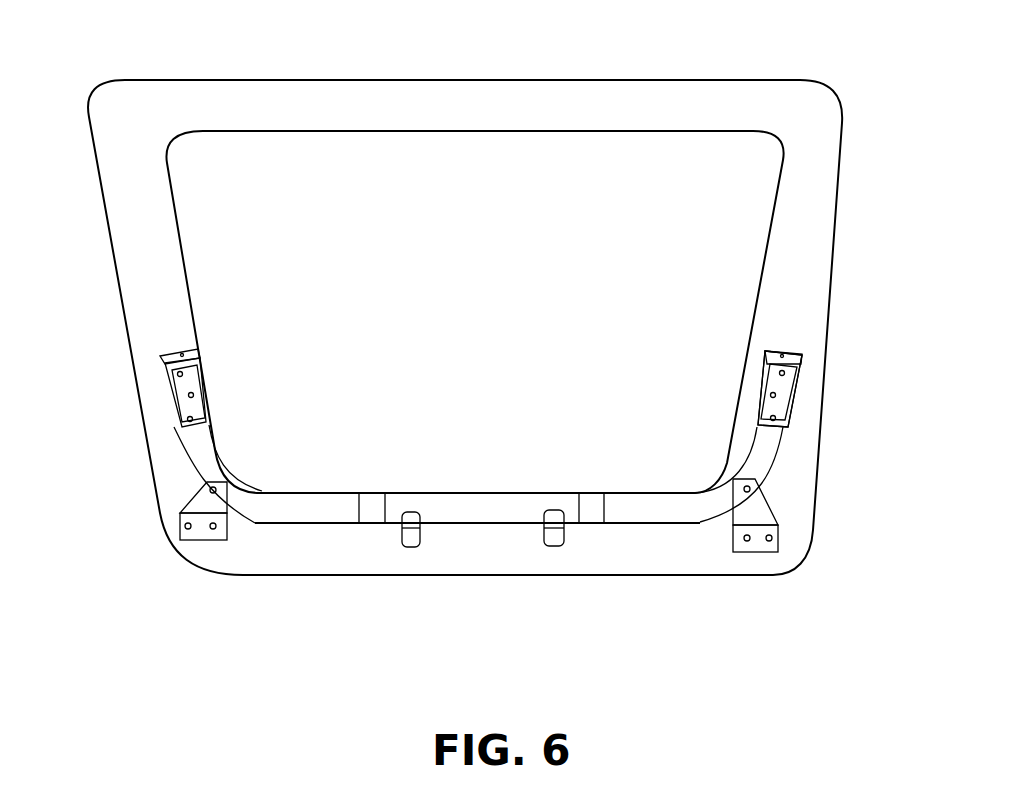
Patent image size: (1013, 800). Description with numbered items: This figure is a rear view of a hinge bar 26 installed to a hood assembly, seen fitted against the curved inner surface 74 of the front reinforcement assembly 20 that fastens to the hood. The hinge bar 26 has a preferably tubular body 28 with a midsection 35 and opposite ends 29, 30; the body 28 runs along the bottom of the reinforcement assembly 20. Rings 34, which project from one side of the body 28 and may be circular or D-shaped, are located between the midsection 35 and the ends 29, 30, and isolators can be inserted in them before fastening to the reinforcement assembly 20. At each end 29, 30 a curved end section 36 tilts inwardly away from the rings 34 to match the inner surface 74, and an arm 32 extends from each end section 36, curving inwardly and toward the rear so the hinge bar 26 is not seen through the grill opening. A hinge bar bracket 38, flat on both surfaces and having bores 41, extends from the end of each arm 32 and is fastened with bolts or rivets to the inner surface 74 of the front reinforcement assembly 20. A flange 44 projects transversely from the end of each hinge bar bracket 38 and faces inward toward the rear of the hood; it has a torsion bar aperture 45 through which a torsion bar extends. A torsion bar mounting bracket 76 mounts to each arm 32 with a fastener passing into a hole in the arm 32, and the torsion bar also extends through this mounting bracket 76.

The front reinforcement assembly 20 is at (407, 90).
The inner surface 74 is at (164, 243).
The hinge bar 26 is at (325, 508).
The midsection 35 is at (473, 494).
The end 29 is at (268, 494).
The end 30 is at (703, 493).
The arm 32 is at (203, 466).
The end section 36 is at (711, 517).
The torsion bar mounting bracket 76 is at (758, 512).
The bores 41 is at (173, 414).
The flange 44 is at (165, 361).
The torsion bar aperture 45 is at (800, 359).
The hinge bar bracket 38 is at (782, 398).
The ring 34 is at (407, 545).
The body 28 is at (527, 513).